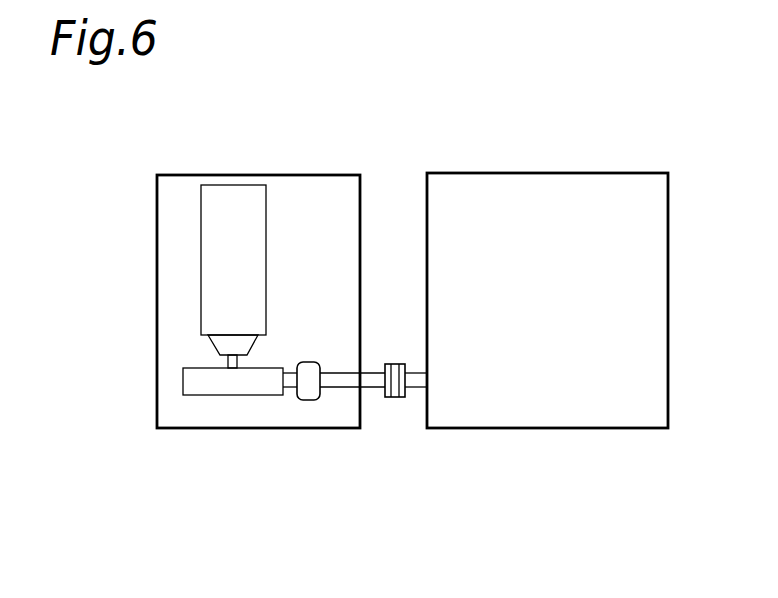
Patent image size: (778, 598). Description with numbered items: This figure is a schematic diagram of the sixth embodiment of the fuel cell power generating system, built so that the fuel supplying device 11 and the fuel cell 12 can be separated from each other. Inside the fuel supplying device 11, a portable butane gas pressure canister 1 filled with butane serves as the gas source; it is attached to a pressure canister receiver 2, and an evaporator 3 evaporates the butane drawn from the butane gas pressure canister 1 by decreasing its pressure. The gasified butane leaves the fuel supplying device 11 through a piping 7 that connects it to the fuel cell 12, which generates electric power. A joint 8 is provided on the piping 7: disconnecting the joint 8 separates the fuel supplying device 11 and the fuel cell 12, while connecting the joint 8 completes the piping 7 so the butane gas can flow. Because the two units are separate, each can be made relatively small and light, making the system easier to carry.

The butane gas pressure canister 1 is at (266, 223).
The pressure canister receiver 2 is at (203, 396).
The evaporator 3 is at (310, 362).
The piping 7 is at (373, 389).
The joint 8 is at (400, 364).
The fuel supplying device 11 is at (157, 247).
The fuel cell 12 is at (545, 173).